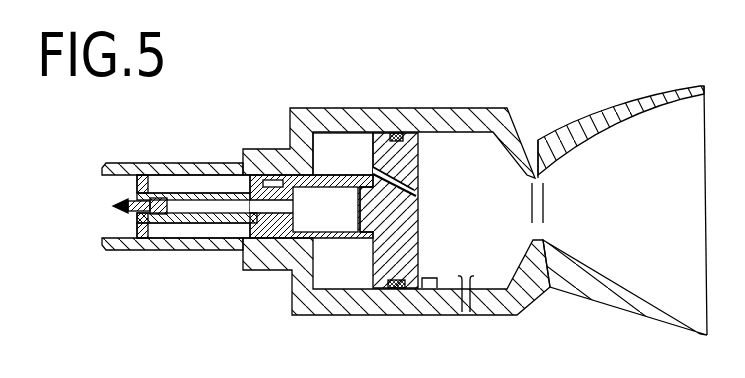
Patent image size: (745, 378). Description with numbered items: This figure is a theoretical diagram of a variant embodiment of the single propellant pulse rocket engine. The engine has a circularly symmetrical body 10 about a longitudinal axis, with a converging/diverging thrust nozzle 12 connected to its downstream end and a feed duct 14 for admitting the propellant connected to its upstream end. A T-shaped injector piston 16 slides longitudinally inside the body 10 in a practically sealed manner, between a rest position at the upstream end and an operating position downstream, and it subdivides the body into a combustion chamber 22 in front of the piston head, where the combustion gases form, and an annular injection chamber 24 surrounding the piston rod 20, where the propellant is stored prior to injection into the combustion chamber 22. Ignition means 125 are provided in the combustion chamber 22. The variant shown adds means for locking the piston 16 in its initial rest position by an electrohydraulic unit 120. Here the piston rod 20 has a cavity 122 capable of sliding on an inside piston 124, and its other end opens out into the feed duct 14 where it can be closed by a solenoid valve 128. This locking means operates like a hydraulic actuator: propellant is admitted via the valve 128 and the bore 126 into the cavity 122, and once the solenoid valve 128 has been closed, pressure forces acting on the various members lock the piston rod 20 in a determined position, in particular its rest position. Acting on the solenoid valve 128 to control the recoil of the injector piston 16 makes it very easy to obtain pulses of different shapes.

The body 10 is at (450, 107).
The converging/diverging thrust nozzle 12 is at (657, 100).
The feed duct 14 is at (184, 163).
The piston 16 is at (421, 170).
The piston rod 20 is at (367, 232).
The combustion chamber 22 is at (497, 226).
The annular injection chamber 24 is at (343, 143).
The electrohydraulic unit 120 is at (100, 218).
The cavity 122 is at (348, 215).
The inside piston 124 is at (278, 210).
The ignition means 125 is at (485, 298).
The bore 126 is at (212, 200).
The solenoid valve 128 is at (115, 202).